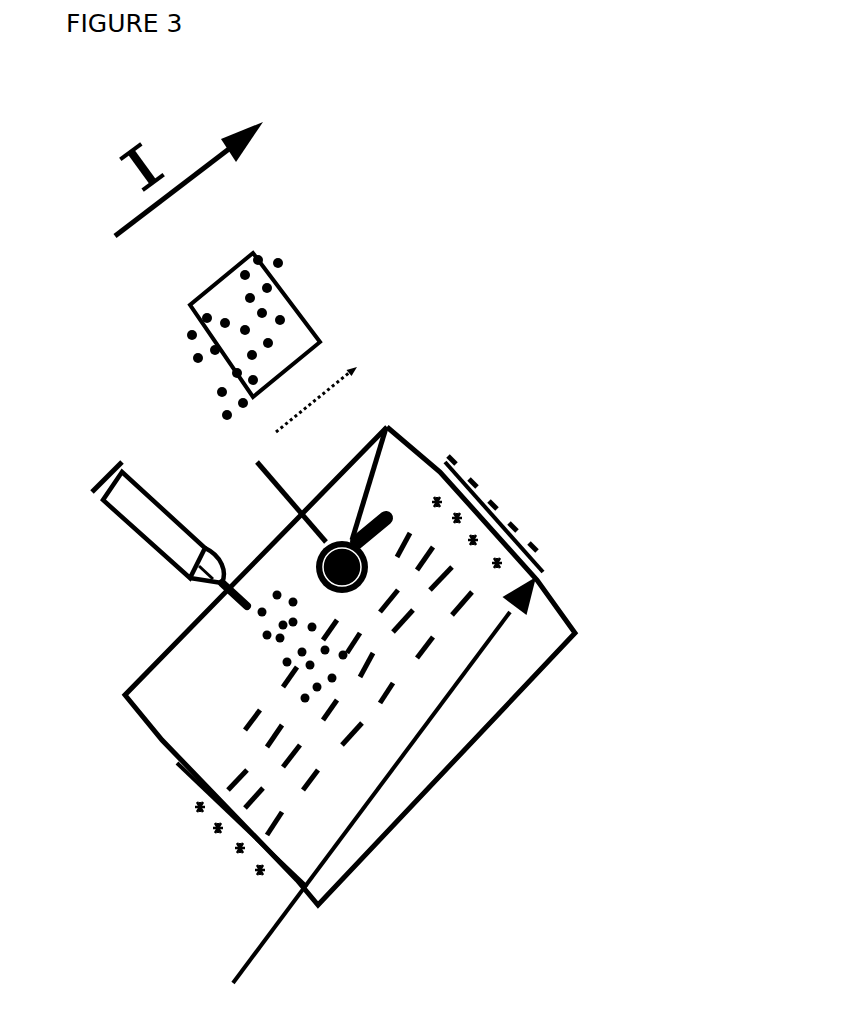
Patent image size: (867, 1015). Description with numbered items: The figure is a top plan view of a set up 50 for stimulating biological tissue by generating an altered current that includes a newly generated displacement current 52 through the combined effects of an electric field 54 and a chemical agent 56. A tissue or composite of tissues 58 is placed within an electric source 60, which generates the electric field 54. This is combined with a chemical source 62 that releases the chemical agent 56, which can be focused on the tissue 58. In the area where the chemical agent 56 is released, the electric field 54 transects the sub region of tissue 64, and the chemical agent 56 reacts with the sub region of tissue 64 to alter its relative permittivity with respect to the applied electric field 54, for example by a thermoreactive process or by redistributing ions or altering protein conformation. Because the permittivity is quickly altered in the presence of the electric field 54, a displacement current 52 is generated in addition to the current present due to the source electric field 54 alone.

The set up 50 is at (466, 176).
The displacement current 52 is at (167, 154).
The electric field 54 is at (205, 752).
The chemical agent 56 is at (260, 652).
The tissue or composite of tissues 58 is at (473, 740).
The electric source 60 is at (224, 886).
The chemical source 62 is at (140, 538).
The sub region of tissue 64 is at (196, 320).